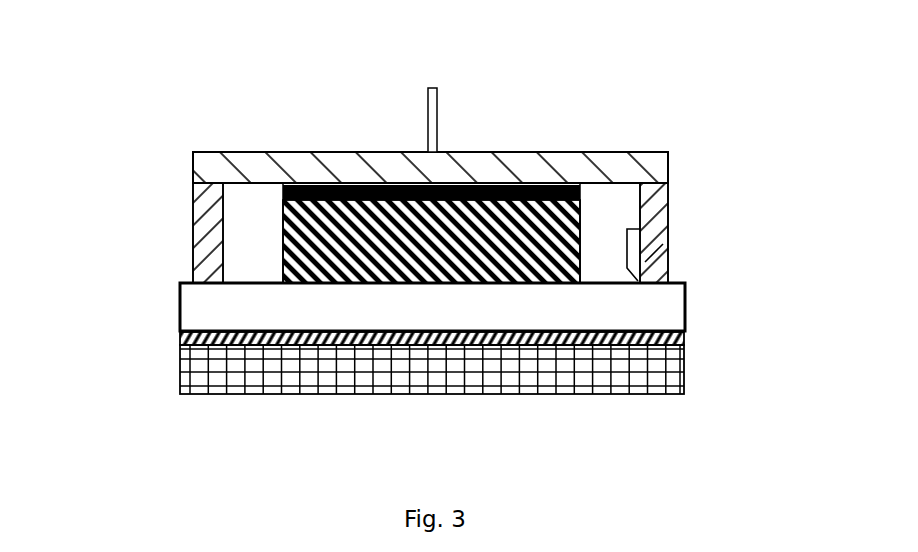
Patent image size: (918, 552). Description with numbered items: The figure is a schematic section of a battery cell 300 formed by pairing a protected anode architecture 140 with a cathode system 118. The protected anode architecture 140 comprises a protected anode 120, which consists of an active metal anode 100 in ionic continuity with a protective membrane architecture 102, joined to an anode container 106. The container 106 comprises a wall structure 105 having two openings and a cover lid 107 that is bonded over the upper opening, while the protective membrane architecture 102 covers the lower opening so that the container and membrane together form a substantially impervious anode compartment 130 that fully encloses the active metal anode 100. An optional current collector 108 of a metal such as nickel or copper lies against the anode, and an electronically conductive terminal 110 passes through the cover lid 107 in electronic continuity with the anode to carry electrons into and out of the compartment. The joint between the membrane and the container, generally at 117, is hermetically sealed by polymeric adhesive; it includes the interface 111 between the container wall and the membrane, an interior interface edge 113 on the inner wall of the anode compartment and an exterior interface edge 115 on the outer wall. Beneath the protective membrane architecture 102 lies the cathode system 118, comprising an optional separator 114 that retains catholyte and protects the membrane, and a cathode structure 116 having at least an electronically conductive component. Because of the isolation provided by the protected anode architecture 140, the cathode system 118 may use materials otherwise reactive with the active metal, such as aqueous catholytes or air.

The active metal anode 100 is at (283, 248).
The protective membrane architecture 102 is at (179, 307).
The wall structure 105 is at (668, 207).
The anode container 106 is at (510, 184).
The cover lid 107 is at (655, 152).
The current collector 108 is at (283, 193).
The terminal 110 is at (427, 118).
The interface at the joint 111 is at (705, 250).
The interior interface edge 113 is at (640, 229).
The separator 114 is at (684, 338).
The exterior interface edge 115 is at (705, 277).
The cathode structure 116 is at (684, 368).
The joint 117 is at (727, 248).
The cathode system 118 is at (504, 356).
The protected anode 120 is at (358, 254).
The anode compartment 130 is at (270, 227).
The protected anode architecture 140 is at (429, 174).
The cell 300 is at (429, 256).